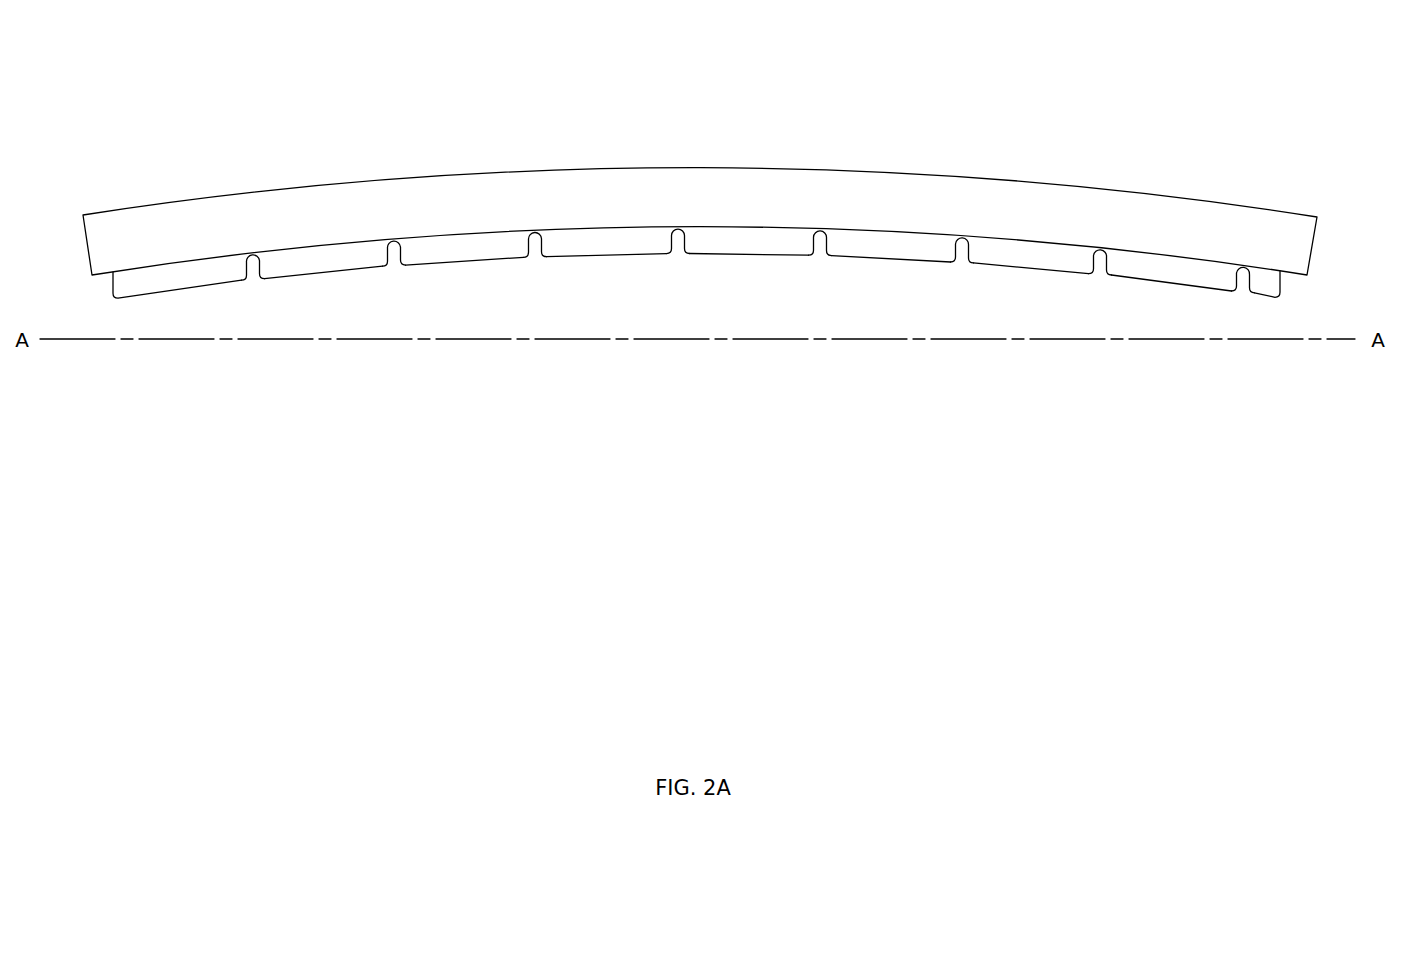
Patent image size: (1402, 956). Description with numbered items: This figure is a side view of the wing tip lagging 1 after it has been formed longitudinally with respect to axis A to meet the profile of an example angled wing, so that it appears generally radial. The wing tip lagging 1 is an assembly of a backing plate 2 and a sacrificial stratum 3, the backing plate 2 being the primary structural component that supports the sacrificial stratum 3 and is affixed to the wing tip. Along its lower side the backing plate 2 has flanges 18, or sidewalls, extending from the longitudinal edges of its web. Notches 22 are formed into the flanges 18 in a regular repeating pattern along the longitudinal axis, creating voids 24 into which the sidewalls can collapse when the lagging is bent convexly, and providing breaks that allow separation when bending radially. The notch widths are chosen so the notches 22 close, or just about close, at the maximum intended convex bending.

The wing tip lagging 1 is at (606, 139).
The backing plate 2 is at (182, 288).
The sacrificial stratum 3 is at (193, 197).
The flanges 18 is at (465, 250).
The notches 22 is at (255, 277).
The voids 24 is at (253, 277).